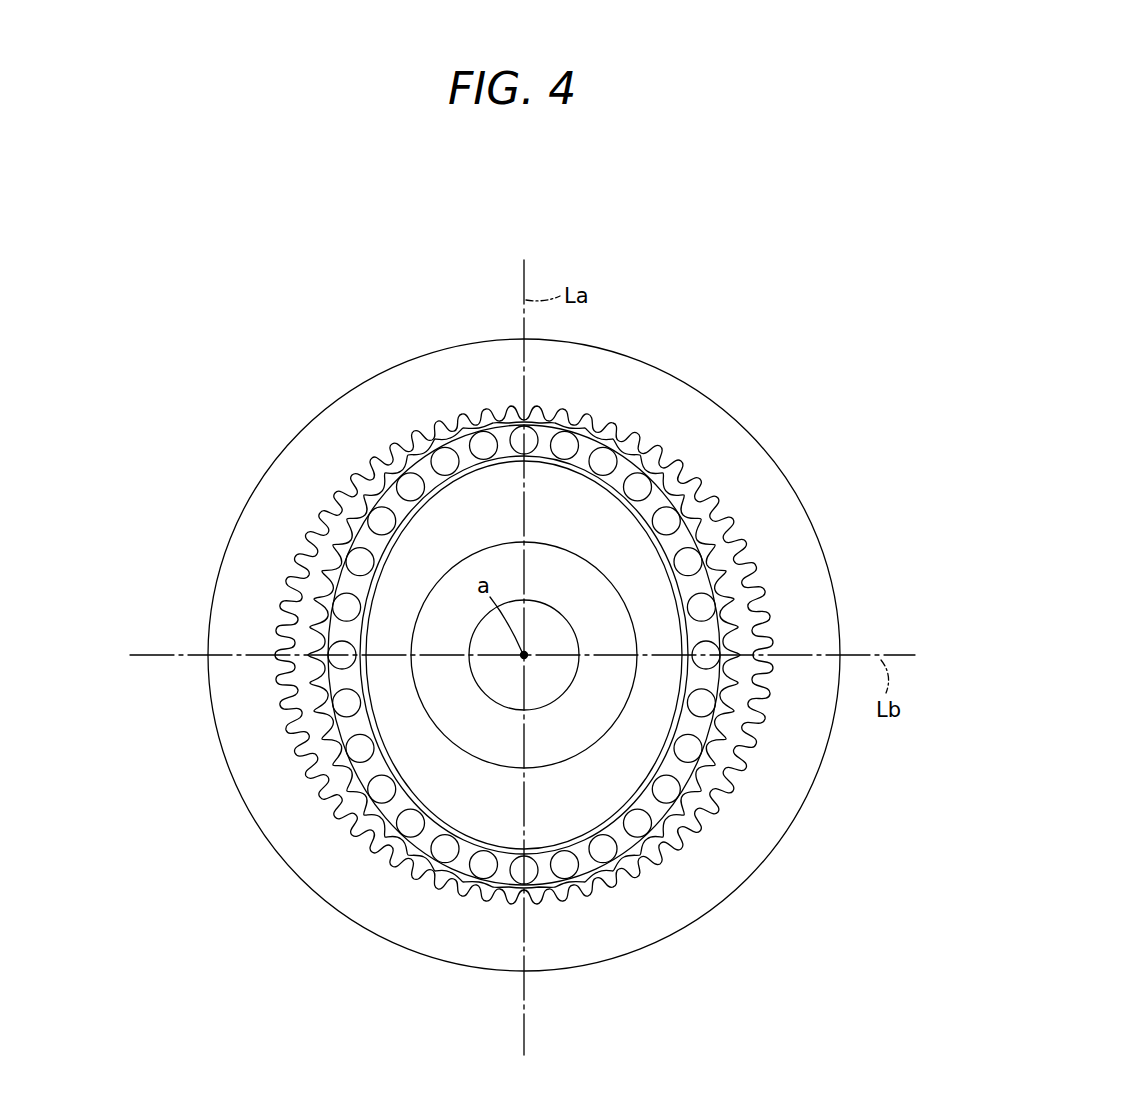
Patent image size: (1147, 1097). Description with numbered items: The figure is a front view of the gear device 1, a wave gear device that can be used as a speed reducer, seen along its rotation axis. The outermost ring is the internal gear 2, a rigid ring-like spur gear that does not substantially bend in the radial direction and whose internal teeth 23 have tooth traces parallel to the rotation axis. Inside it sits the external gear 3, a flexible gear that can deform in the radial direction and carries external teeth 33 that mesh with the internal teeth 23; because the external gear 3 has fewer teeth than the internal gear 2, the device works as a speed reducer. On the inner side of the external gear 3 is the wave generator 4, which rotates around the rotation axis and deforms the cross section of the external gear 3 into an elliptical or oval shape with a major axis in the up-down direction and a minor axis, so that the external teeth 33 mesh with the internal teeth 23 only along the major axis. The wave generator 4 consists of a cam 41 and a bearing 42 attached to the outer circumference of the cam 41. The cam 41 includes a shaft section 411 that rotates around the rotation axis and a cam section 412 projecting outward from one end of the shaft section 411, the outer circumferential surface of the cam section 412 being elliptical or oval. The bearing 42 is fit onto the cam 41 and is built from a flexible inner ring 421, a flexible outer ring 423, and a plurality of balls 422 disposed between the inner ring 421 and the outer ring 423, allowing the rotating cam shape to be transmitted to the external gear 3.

The gear device 1 is at (746, 207).
The internal gear 2 is at (712, 391).
The internal teeth 23 is at (753, 728).
The external gear 3 is at (752, 619).
The external teeth 33 is at (732, 765).
The wave generator 4 is at (427, 887).
The cam 41 is at (183, 815).
The shaft section 411 is at (437, 735).
The cam section 412 is at (445, 787).
The bearing 42 is at (758, 962).
The inner ring 421 is at (605, 855).
The balls 422 is at (622, 887).
The outer ring 423 is at (590, 895).